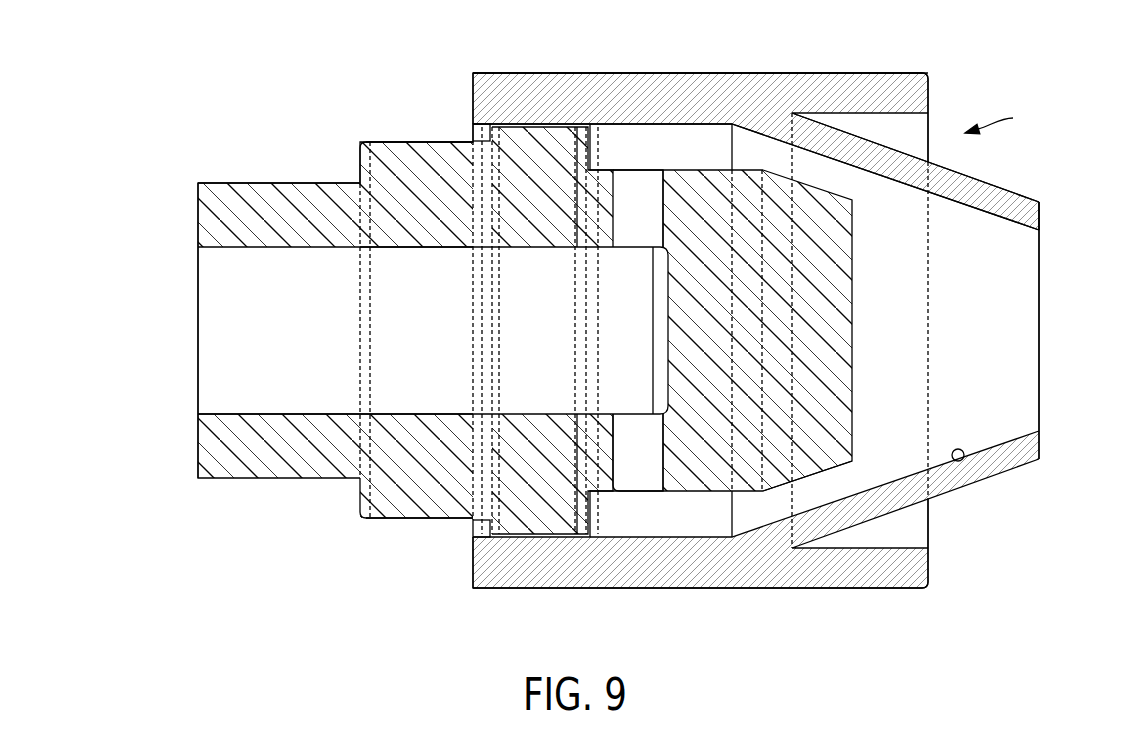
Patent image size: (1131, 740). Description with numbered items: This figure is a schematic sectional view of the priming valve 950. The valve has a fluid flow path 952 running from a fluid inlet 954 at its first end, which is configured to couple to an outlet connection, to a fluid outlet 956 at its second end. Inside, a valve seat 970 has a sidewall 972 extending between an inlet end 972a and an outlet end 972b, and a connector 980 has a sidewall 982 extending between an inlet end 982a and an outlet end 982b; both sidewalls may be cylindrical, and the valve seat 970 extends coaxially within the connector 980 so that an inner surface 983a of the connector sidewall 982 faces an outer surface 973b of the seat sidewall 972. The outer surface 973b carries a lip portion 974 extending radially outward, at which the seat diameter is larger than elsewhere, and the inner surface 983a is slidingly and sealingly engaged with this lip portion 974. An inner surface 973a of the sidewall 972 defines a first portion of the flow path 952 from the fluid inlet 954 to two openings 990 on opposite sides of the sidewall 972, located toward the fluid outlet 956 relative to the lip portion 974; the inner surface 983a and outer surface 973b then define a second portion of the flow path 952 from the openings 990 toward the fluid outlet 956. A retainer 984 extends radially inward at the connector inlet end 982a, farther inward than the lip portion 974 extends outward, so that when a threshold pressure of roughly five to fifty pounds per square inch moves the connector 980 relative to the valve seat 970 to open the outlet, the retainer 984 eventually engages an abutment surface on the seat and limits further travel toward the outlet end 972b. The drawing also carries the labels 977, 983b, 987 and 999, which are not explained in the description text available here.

The priming valve 950 is at (310, 94).
The fluid flow path 952 is at (408, 348).
The fluid inlet 954 is at (198, 360).
The fluid outlet 956 is at (1040, 388).
The valve seat 970 is at (383, 142).
The sidewall of the valve seat 972 is at (418, 142).
The inlet end of the valve seat 972a is at (202, 212).
The outlet end of the valve seat 972b is at (853, 270).
The inner surface of the valve seat sidewall 973a is at (252, 414).
The outer surface of the valve seat sidewall 973b is at (377, 520).
The lip portion 974 is at (593, 514).
The tapered surface 977 is at (828, 468).
The connector 980 is at (802, 590).
The sidewall of the connector 982 is at (741, 590).
The inlet end of the connector 982a is at (473, 575).
The outlet end of the connector 982b is at (1038, 215).
The inner surface of the connector sidewall 983a is at (659, 126).
The outer housing surface 983b is at (707, 73).
The retainer 984 is at (473, 130).
The vent opening 987 is at (960, 461).
The opening 990 is at (647, 478).
The flow direction 999 is at (1007, 118).